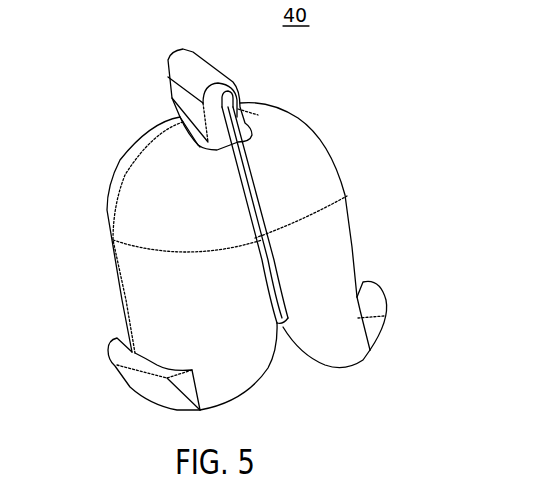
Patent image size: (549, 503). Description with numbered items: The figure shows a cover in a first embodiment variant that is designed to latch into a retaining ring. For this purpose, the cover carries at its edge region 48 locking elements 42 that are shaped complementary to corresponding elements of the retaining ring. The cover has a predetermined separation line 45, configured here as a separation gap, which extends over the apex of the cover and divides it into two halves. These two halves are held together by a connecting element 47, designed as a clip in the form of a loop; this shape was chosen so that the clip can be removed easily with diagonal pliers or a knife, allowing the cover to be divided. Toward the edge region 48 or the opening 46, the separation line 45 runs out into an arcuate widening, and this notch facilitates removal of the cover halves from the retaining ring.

The locking elements 42 is at (406, 287).
The predetermined separation line 45 is at (258, 170).
The opening 46 is at (290, 398).
The connecting element 47 is at (150, 72).
The edge region 48 is at (346, 371).